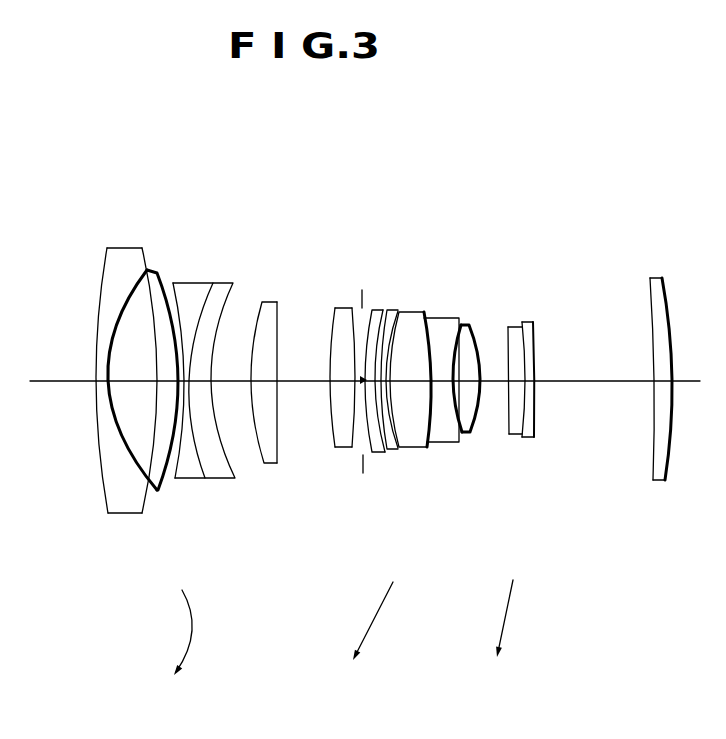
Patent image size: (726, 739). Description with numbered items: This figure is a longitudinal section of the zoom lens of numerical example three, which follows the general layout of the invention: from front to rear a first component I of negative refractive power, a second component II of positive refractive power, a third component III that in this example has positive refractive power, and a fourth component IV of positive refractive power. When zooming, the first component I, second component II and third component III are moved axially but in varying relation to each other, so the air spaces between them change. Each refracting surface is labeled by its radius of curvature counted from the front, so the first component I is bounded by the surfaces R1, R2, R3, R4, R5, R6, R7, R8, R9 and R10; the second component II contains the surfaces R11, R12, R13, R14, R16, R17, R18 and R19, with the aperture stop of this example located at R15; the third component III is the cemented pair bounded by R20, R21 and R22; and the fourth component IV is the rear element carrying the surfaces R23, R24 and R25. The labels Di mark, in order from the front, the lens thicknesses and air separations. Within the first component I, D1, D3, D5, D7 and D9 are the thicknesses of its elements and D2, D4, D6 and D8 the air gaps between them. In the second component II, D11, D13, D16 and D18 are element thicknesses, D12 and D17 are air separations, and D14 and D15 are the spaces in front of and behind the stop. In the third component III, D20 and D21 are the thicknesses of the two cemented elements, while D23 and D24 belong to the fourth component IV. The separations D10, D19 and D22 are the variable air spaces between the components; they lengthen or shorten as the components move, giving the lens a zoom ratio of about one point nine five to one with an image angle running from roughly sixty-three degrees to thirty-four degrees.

The first component I is at (287, 151).
The second component II is at (515, 149).
The third component III is at (620, 182).
The fourth component IV is at (712, 184).
The first lens surface R1 is at (100, 277).
The second lens surface R2 is at (135, 290).
The third lens surface R3 is at (143, 290).
The fourth lens surface R4 is at (171, 292).
The fifth lens surface R5 is at (173, 282).
The sixth lens surface R6 is at (210, 290).
The seventh lens surface R7 is at (233, 283).
The eighth lens surface R8 is at (263, 304).
The ninth lens surface R9 is at (278, 303).
The tenth lens surface R10 is at (343, 309).
The eleventh lens surface R11 is at (353, 309).
The twelfth lens surface R12 is at (371, 311).
The thirteenth lens surface R13 is at (370, 310).
The fourteenth lens surface R14 is at (381, 310).
The aperture stop R15 is at (397, 311).
The sixteenth lens surface R16 is at (423, 311).
The seventeenth lens surface R17 is at (445, 318).
The eighteenth lens surface R18 is at (458, 318).
The nineteenth lens surface R19 is at (470, 325).
The twentieth lens surface R20 is at (478, 330).
The twenty-first lens surface R21 is at (508, 326).
The twenty-second lens surface R22 is at (523, 322).
The twenty-third lens surface R23 is at (534, 322).
The twenty-fourth lens surface R24 is at (646, 282).
The twenty-fifth lens surface R25 is at (669, 290).
The first lens thickness D1 is at (100, 383).
The second air separation D2 is at (101, 383).
The third lens thickness D3 is at (157, 383).
The fourth air separation D4 is at (168, 383).
The fifth lens thickness D5 is at (184, 383).
The sixth air separation D6 is at (198, 383).
The seventh lens thickness D7 is at (235, 383).
The eighth air separation D8 is at (277, 462).
The ninth lens thickness D9 is at (302, 383).
The tenth air separation D10 is at (337, 383).
The eleventh lens thickness D11 is at (353, 383).
The twelfth air separation D12 is at (372, 383).
The thirteenth lens thickness D13 is at (380, 383).
The fourteenth air separation D14 is at (385, 383).
The fifteenth air separation D15 is at (390, 383).
The sixteenth lens thickness D16 is at (410, 383).
The seventeenth air separation D17 is at (452, 383).
The eighteenth lens thickness D18 is at (457, 383).
The nineteenth air separation D19 is at (472, 383).
The twentieth lens thickness D20 is at (492, 383).
The twenty-first lens thickness D21 is at (505, 383).
The twenty-second air separation D22 is at (530, 437).
The twenty-third lens thickness D23 is at (593, 385).
The twenty-fourth lens thickness or air separation D24 is at (655, 382).